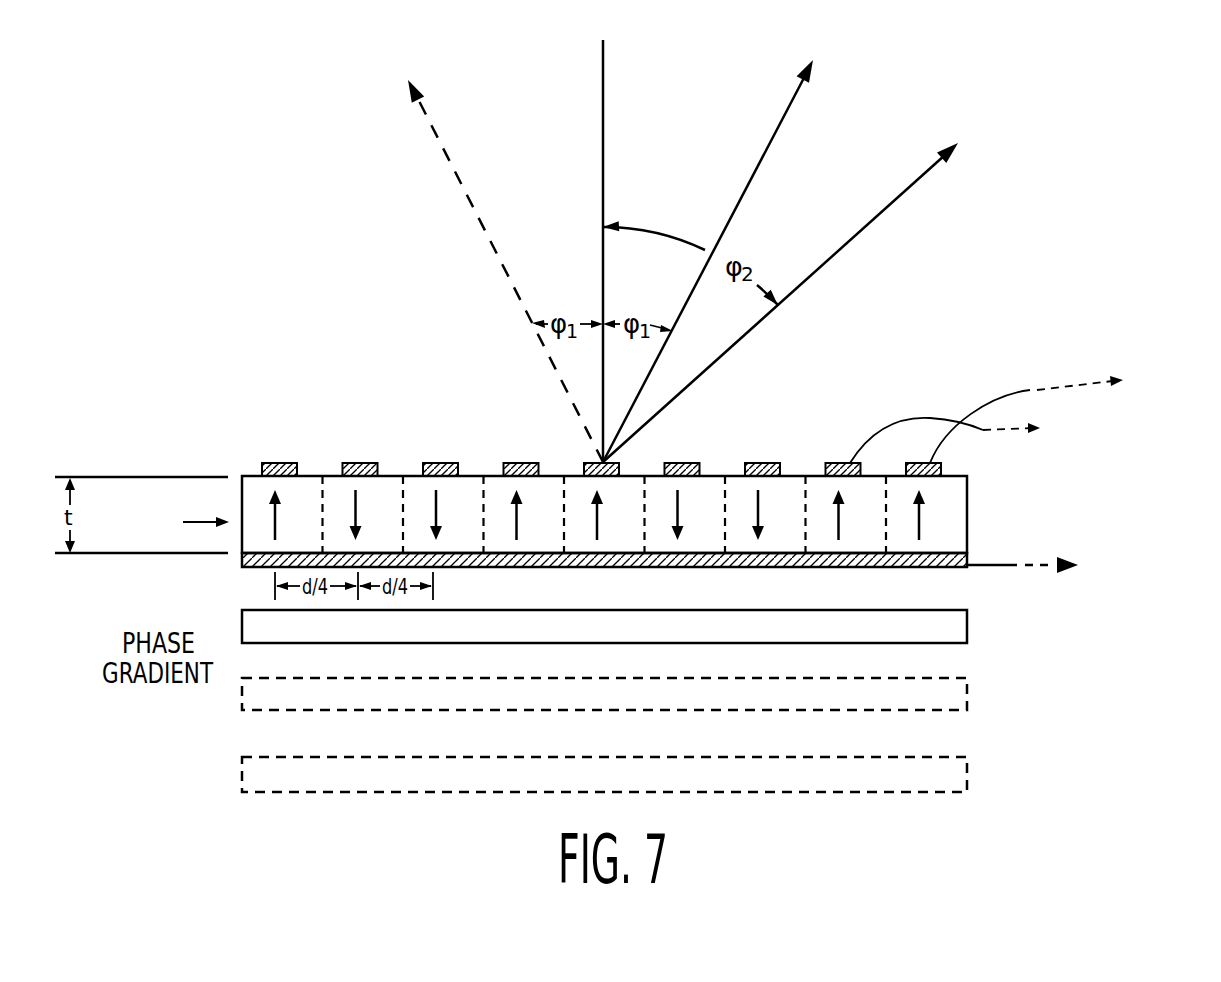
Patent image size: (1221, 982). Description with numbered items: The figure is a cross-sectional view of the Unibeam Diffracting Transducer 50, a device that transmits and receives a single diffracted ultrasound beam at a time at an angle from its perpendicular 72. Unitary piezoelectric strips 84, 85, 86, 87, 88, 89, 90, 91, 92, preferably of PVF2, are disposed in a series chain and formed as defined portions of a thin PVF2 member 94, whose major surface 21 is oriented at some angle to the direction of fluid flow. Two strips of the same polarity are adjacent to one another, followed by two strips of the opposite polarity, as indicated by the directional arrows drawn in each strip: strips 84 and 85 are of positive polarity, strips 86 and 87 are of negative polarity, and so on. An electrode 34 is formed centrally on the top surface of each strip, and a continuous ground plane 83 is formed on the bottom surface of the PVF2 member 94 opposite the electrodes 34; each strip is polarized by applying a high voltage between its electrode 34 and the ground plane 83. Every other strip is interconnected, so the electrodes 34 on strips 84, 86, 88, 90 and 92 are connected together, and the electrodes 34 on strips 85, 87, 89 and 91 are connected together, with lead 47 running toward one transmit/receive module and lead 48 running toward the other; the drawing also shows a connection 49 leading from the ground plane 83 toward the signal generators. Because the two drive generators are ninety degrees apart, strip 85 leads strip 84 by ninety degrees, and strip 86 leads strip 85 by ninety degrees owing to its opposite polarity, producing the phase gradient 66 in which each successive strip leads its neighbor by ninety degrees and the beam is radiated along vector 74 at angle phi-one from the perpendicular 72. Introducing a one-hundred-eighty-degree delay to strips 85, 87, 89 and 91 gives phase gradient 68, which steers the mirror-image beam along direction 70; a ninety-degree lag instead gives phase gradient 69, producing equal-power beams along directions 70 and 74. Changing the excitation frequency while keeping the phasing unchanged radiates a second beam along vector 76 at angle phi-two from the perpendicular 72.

The major surface 21 is at (100, 476).
The electrode 34 is at (282, 463).
The lead 47 is at (1003, 391).
The lead 48 is at (874, 431).
The ground plane connection line 49 is at (995, 567).
The Unibeam Diffracting Transducer 50 is at (247, 388).
The phase gradient 66 is at (968, 623).
The phase gradient 68 is at (968, 688).
The phase gradient 69 is at (969, 765).
The beam direction 70 is at (435, 127).
The perpendicular 72 is at (607, 97).
The beam direction vector 74 is at (780, 127).
The beam direction vector 76 is at (900, 196).
The ground plane 83 is at (265, 568).
The piezoelectric strip 84 is at (952, 534).
The piezoelectric strip 85 is at (872, 534).
The piezoelectric strip 86 is at (791, 534).
The piezoelectric strip 87 is at (710, 534).
The piezoelectric strip 88 is at (630, 534).
The piezoelectric strip 89 is at (550, 534).
The piezoelectric strip 90 is at (469, 534).
The piezoelectric strip 91 is at (388, 534).
The piezoelectric strip 92 is at (308, 534).
The PVF2 member 94 is at (187, 524).